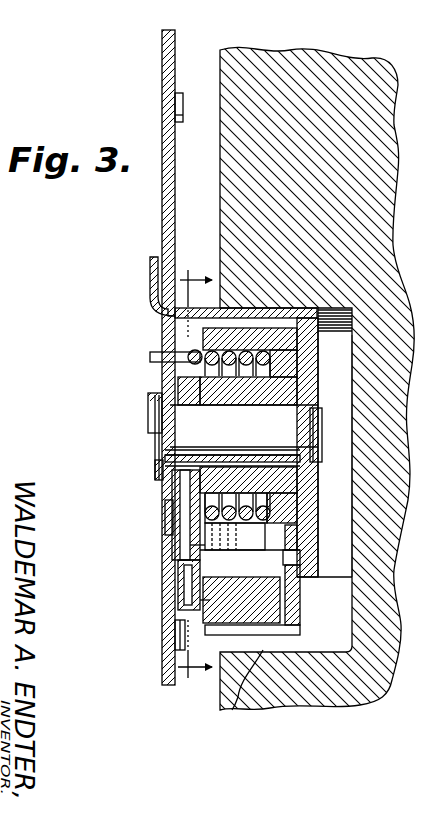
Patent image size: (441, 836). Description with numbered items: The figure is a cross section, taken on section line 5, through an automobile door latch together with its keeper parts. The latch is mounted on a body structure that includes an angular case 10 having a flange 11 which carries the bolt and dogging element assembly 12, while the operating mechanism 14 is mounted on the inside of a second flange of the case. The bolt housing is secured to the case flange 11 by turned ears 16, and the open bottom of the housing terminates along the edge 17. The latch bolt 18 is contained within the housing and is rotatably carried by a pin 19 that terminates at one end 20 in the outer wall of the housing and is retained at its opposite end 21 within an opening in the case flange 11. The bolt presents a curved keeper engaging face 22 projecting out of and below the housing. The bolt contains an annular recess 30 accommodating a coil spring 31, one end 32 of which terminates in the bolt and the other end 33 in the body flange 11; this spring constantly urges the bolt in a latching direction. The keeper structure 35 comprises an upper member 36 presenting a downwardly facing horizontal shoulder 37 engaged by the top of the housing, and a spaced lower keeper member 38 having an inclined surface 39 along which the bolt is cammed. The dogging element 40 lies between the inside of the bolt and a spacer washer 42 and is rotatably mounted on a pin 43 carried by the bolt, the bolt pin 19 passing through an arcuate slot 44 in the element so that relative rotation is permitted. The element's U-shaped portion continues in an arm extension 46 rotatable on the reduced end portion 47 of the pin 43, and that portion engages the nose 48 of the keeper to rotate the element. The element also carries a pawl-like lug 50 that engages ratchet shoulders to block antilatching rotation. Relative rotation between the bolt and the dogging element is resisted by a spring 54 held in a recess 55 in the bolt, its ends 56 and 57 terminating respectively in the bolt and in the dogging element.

The section line 5- 5 is at (195, 473).
The angular case 10 is at (160, 186).
The flange 11 is at (162, 214).
The bolt and dogging element assembly 12 is at (328, 397).
The operating mechanism 14 is at (312, 356).
The turned ears 16 is at (150, 283).
The edge 17 is at (326, 520).
The latch bolt 18 is at (312, 392).
The pin 19 is at (244, 426).
The pin end 20 is at (306, 438).
The opposite pin end 21 is at (176, 440).
The curved keeper engaging face 22 is at (288, 622).
The annular recess 30 is at (222, 357).
The coil spring 31 is at (190, 520).
The spring end 32 is at (190, 578).
The opposite spring end 33 is at (150, 358).
The keeper structure 35 is at (404, 158).
The upper keeper member 36 is at (333, 283).
The horizontal shoulder 37 is at (350, 320).
The lower keeper member 38 is at (303, 692).
The inclined surface 39 is at (240, 700).
The dogging element 40 is at (148, 395).
The spacer washer 42 is at (170, 490).
The pin 43 is at (200, 548).
The arcuate slot 44 is at (196, 400).
The arm extension 46 is at (300, 590).
The reduced end portion 47 is at (292, 555).
The nose 48 is at (338, 577).
The lug 50 is at (160, 505).
The spring 54 is at (200, 600).
The recess 55 is at (183, 636).
The spring end 56 is at (339, 456).
The opposite spring end 57 is at (198, 614).